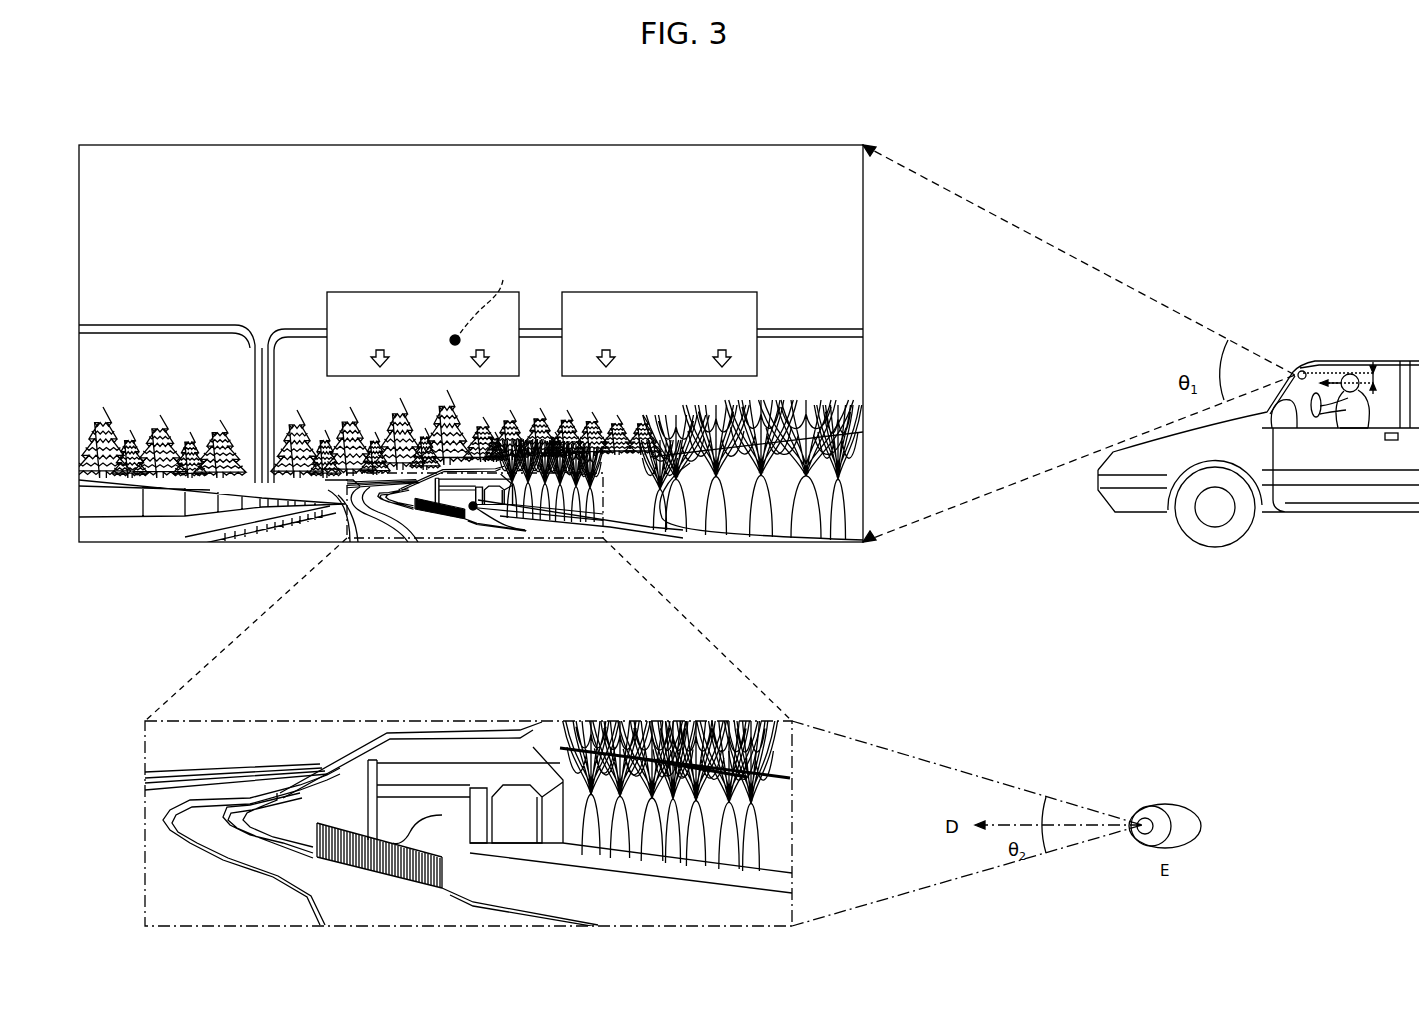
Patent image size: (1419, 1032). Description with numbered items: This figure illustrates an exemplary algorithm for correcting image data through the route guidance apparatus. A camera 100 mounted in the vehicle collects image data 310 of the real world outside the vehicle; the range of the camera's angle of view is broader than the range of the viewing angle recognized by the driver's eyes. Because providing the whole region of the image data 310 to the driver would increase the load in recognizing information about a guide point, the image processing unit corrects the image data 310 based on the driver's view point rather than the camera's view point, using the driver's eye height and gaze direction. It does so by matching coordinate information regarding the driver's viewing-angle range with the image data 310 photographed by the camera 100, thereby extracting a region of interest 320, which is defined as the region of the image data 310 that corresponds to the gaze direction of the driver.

The camera 100 is at (1326, 365).
The image data 310 is at (863, 310).
The region of interest (ROI) 320 is at (793, 812).